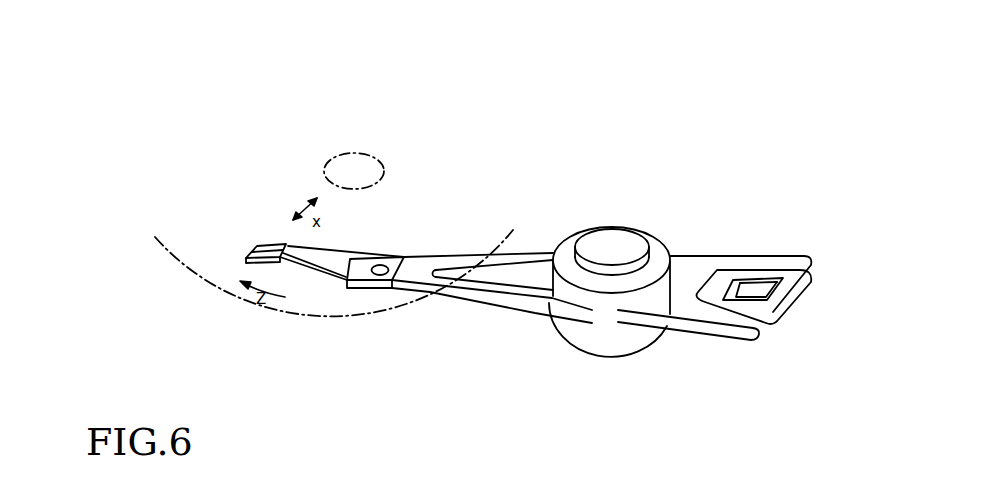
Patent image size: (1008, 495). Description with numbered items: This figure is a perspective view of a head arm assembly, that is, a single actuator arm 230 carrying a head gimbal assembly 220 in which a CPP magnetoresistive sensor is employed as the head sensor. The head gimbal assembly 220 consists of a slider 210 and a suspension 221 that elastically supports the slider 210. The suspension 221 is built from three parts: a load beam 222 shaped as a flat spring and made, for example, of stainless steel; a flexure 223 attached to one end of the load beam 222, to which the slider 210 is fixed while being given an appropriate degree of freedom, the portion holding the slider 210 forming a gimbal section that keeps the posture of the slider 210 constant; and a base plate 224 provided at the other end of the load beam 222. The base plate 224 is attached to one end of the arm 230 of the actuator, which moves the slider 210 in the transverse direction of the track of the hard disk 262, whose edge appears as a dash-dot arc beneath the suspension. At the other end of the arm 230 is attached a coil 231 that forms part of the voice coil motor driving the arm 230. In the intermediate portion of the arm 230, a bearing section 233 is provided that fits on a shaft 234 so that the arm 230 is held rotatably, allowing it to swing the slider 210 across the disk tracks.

The slider 210 is at (271, 249).
The head gimbal assembly 220 is at (339, 297).
The suspension 221 is at (331, 236).
The load beam 222 is at (355, 260).
The flexure 223 is at (247, 257).
The base plate 224 is at (402, 257).
The arm 230 is at (462, 300).
The coil 231 is at (797, 310).
The bearing section 233 is at (568, 240).
The shaft 234 is at (620, 242).
The hard disk 262 is at (280, 318).